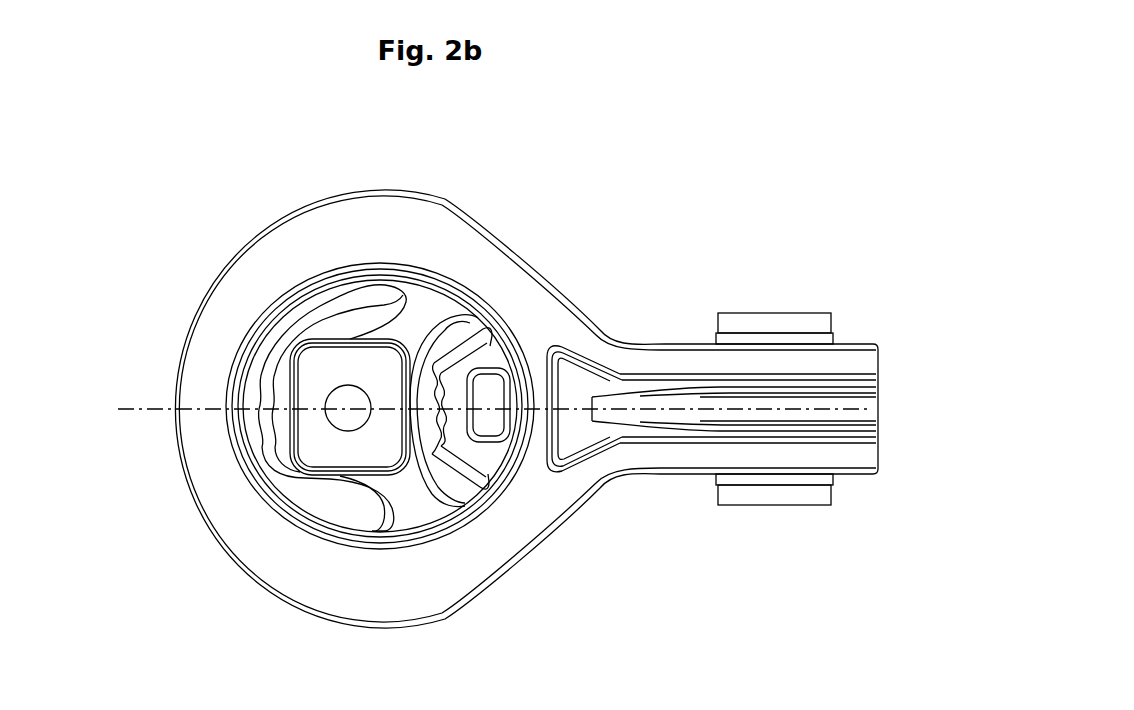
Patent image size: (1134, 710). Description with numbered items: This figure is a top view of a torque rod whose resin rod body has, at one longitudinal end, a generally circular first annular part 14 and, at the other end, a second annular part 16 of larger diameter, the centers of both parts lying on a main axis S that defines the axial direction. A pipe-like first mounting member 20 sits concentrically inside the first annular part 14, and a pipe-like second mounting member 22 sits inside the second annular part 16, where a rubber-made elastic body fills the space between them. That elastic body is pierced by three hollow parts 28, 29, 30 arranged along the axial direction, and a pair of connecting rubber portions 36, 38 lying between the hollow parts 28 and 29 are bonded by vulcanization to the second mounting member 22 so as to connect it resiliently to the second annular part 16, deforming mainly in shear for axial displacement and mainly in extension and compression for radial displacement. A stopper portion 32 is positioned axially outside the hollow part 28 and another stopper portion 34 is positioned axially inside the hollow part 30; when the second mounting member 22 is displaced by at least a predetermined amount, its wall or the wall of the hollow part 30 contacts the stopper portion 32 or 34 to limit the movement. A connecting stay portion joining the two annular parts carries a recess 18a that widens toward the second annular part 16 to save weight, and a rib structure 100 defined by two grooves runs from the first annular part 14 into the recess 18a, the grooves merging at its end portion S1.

The first annular part 14 is at (864, 447).
The second annular part 16 is at (377, 222).
The recess 18a is at (577, 398).
The first mounting member 20 is at (786, 313).
The second mounting member 22 is at (328, 368).
The hollow part 28 is at (317, 497).
The hollow part 29 is at (440, 470).
The hollow part 30 is at (490, 427).
The stopper portion 32 is at (250, 402).
The stopper portion 34 is at (513, 417).
The connecting rubber portion 36 is at (430, 308).
The connecting rubber portion 38 is at (408, 493).
The rib structure 100 is at (862, 400).
The main axis S is at (140, 410).
The end portion of the rib structure S1 is at (588, 430).